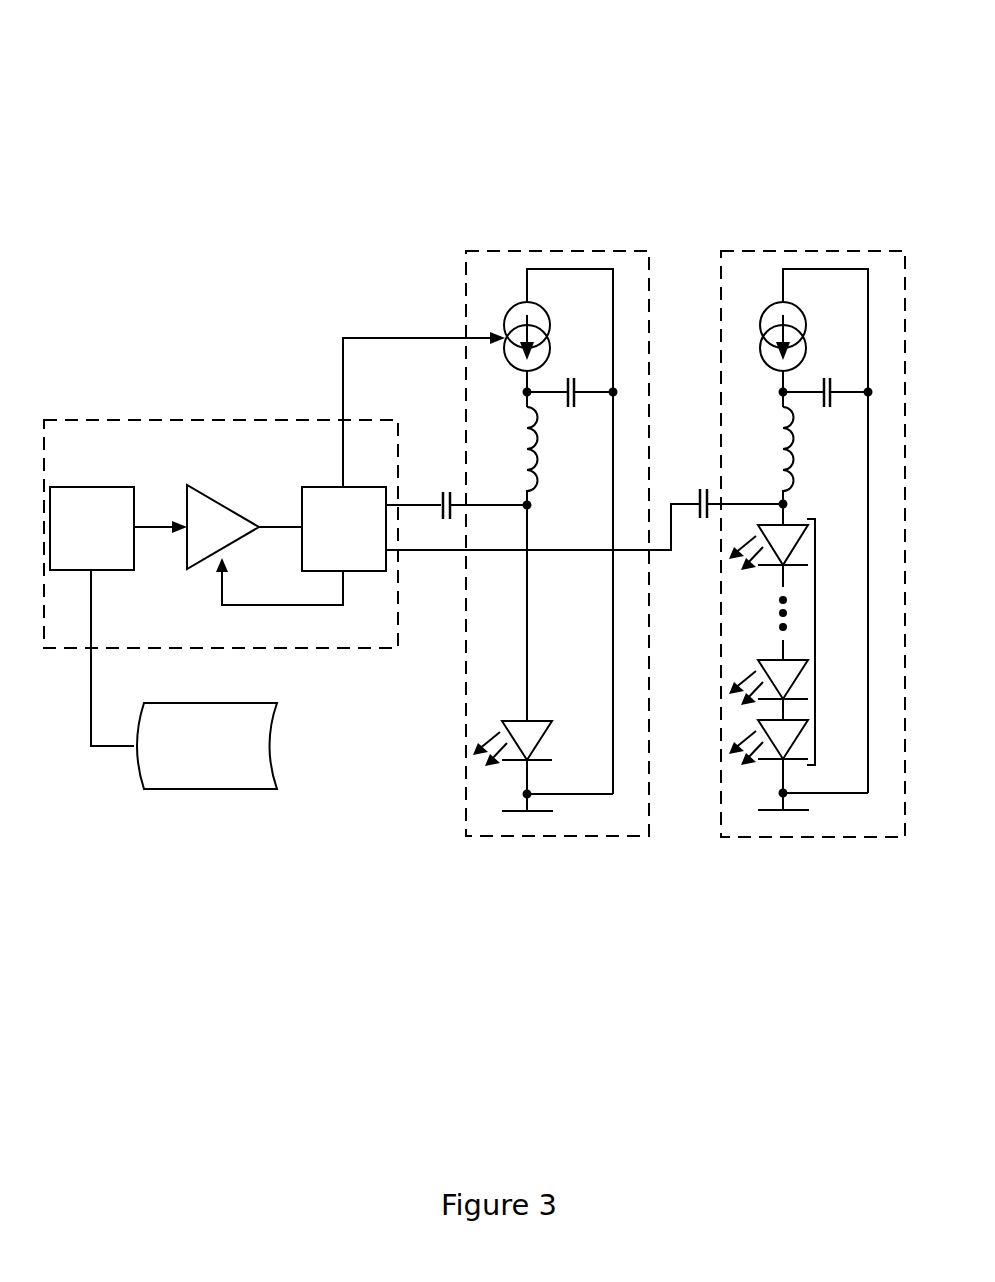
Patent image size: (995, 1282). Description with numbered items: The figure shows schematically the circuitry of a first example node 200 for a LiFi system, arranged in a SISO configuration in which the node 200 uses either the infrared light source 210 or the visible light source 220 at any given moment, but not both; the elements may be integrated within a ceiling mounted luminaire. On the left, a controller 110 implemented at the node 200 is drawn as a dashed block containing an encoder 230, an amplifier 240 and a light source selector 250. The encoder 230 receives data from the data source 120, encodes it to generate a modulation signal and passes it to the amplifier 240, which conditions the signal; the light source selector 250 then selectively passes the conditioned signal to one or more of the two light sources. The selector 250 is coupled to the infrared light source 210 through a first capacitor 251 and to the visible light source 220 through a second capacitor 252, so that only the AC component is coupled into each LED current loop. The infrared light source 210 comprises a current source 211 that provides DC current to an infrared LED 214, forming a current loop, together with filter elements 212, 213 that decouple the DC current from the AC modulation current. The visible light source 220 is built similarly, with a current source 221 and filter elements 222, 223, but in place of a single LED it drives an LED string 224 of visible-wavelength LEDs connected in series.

The node 200 is at (466, 104).
The controller 110 is at (267, 420).
The data source 120 is at (212, 790).
The encoder 230 is at (118, 487).
The amplifier 240 is at (187, 547).
The light source selector 250 is at (305, 487).
The infrared light source 210 is at (585, 251).
The current source 211 is at (510, 312).
The filter element 212 is at (610, 378).
The filter element 213 is at (527, 425).
The infrared LED 214 is at (547, 726).
The first capacitor 251 is at (443, 492).
The visible light source 220 is at (825, 251).
The current source 221 is at (766, 312).
The filter element 222 is at (866, 378).
The filter element 223 is at (783, 425).
The LED string 224 is at (815, 598).
The second capacitor 252 is at (703, 520).